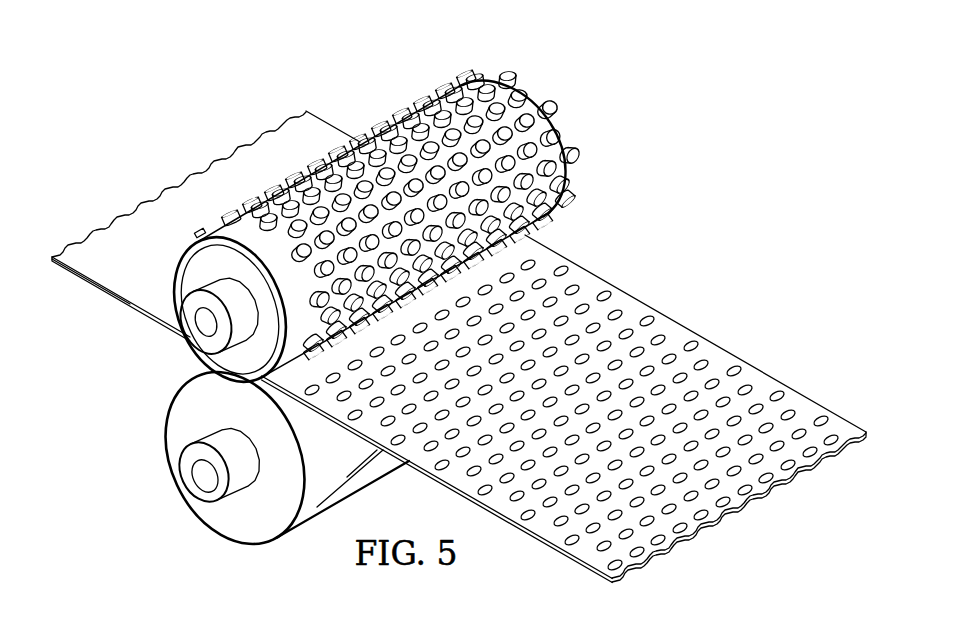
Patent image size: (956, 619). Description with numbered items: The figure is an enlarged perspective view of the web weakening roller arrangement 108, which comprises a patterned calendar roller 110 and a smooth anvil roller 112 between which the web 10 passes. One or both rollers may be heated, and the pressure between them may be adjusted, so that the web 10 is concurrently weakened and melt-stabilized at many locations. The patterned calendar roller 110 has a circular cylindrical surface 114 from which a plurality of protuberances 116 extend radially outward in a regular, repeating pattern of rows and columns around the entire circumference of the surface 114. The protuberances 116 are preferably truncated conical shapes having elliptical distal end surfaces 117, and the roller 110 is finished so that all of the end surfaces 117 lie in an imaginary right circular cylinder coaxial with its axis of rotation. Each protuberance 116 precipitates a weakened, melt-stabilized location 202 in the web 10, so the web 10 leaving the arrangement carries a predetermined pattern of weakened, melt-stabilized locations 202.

The web 10 is at (459, 325).
The web weakening roller arrangement 108 is at (371, 216).
The patterned calendar roller 110 is at (183, 283).
The smooth anvil roller 112 is at (172, 426).
The circular cylindrical surface 114 is at (245, 213).
The protuberances 116 is at (228, 221).
The elliptical distal end surfaces 117 is at (277, 188).
The weakened, melt-stabilized locations 202 is at (607, 294).